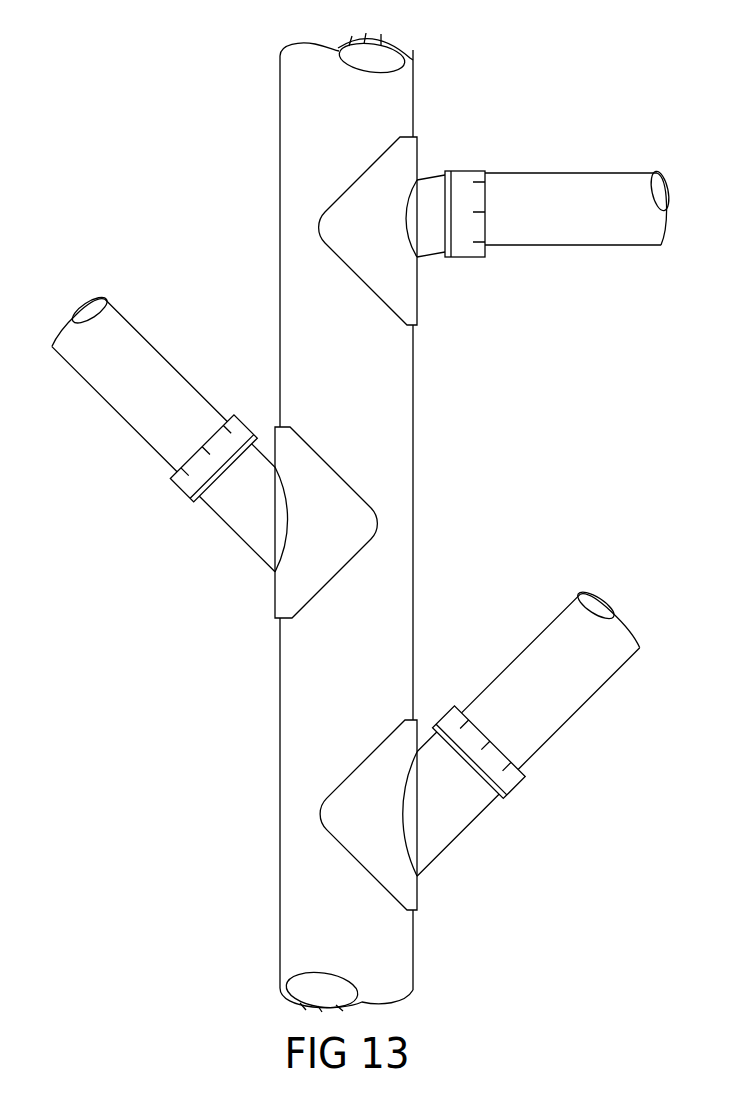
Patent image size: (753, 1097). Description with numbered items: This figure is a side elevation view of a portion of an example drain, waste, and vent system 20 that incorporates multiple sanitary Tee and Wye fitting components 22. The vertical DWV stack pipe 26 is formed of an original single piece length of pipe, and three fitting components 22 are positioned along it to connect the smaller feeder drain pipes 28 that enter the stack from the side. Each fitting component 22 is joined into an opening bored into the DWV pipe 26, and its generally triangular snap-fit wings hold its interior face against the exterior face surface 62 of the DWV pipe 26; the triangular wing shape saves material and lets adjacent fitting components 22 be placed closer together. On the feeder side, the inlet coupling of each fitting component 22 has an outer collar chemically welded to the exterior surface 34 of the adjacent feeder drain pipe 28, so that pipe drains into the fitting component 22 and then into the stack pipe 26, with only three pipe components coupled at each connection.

The drain, waste, and vent (DWV) system 20 is at (129, 141).
The sanitary Tee or Wye fitting component 22 is at (425, 151).
The DWV pipe 26 is at (300, 522).
The feeder DWV drain pipe 28 is at (358, 484).
The exterior surface of the feeder DWV drain pipe 34 is at (583, 221).
The exterior face surface of the DWV pipe 62 is at (358, 385).